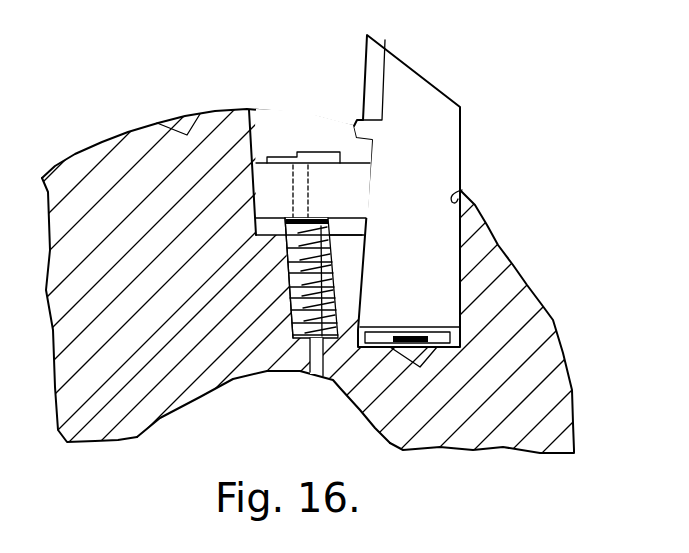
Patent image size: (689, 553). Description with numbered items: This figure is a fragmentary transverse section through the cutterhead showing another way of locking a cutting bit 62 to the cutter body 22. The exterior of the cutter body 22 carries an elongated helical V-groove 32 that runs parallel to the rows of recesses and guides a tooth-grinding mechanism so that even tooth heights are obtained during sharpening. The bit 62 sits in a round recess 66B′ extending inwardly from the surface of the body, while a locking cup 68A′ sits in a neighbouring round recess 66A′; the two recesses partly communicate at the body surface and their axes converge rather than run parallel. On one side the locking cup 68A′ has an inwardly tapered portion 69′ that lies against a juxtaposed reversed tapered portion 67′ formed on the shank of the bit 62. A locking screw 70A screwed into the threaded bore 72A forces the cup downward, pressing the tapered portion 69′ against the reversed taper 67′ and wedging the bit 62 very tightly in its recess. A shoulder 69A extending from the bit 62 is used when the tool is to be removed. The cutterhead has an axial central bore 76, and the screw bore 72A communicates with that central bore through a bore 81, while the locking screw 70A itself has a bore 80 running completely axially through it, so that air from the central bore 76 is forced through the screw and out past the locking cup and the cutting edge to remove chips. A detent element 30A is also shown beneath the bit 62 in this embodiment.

The cutter body 22 is at (545, 320).
The helical V-groove 32 is at (187, 114).
The cutting bit 62 is at (424, 77).
The shoulder 69A is at (352, 122).
The locking cup 68A′ is at (256, 193).
The inwardly tapered portion 69′ is at (313, 174).
The bore 80 is at (295, 190).
The round recess 66A′ is at (256, 226).
The reversed tapered portion 67′ is at (360, 222).
The locking screw 70A is at (287, 258).
The threaded bore 72A is at (289, 323).
The bore 81 is at (325, 363).
The detent 30A is at (449, 342).
The round recess 66B′ is at (462, 190).
The axial central bore 76 is at (272, 425).